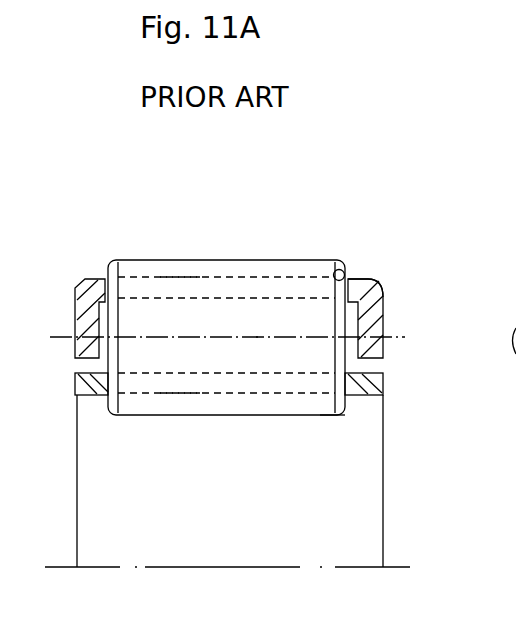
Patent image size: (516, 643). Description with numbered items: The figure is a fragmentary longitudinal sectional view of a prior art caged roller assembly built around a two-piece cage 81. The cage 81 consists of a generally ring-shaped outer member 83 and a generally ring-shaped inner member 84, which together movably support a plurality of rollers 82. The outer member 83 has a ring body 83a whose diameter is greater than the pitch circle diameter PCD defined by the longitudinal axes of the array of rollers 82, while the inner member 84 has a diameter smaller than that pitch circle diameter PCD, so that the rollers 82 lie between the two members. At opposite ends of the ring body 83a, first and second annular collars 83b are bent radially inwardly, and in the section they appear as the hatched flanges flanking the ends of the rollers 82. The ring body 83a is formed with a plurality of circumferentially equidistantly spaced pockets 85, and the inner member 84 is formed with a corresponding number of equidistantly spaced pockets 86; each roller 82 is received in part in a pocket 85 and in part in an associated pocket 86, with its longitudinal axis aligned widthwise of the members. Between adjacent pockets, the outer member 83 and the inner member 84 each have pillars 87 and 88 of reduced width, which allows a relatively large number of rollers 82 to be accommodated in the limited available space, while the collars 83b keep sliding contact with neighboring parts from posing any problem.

The two-piece cage 81 is at (269, 298).
The roller 82 is at (228, 270).
The outer member 83 is at (281, 293).
The ring body 83a is at (300, 276).
The annular collar 83b is at (77, 326).
The inner member 84 is at (75, 375).
The pocket 85 is at (345, 262).
The pocket 86 is at (335, 385).
The pillar 87 is at (172, 272).
The pillar 88 is at (176, 398).
The pitch circle diameter PCD is at (256, 337).